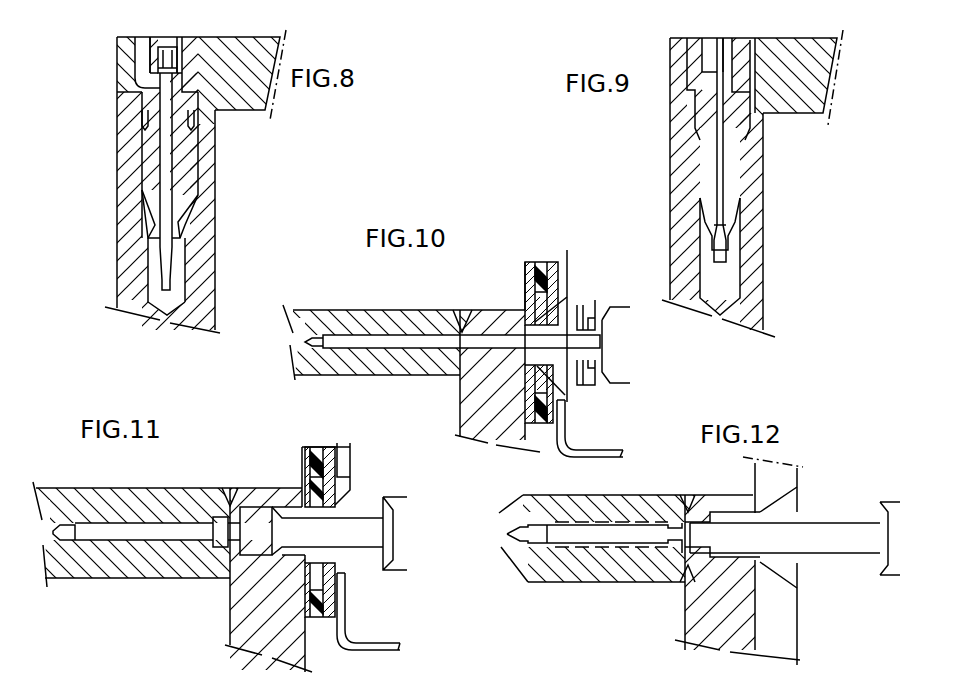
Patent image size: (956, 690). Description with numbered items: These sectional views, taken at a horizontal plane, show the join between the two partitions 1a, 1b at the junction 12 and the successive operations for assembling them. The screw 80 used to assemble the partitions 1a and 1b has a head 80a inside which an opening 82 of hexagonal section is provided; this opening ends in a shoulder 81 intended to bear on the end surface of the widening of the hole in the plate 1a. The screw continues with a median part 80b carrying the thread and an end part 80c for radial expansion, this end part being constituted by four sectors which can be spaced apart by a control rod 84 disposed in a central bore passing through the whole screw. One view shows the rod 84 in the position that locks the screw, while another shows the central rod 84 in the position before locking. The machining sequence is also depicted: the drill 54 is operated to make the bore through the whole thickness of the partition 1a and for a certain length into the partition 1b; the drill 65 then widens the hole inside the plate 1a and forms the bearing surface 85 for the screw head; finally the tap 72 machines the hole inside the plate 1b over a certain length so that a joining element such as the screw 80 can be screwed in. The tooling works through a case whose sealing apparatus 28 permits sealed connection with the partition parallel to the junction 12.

In FIG. 8, the first partition 1a is at (262, 38).
In FIG. 9, the first partition 1a is at (822, 46).
In FIG. 10, the first partition 1a is at (470, 390).
In FIG. 11, the first partition 1a is at (236, 610).
In FIG. 12, the first partition 1a is at (692, 602).
In FIG. 8, the second partition 1b is at (210, 173).
In FIG. 9, the second partition 1b is at (750, 284).
In FIG. 10, the second partition 1b is at (428, 318).
In FIG. 11, the second partition 1b is at (158, 493).
In FIG. 12, the second partition 1b is at (637, 507).
In FIG. 10, the junction 12 is at (468, 316).
In FIG. 10, the sealing apparatus 28 is at (550, 312).
In FIG. 10, the drill 54 is at (392, 340).
In FIG. 11, the drill 65 is at (340, 528).
In FIG. 12, the tap 72 is at (808, 533).
In FIG. 8, the screw 80 is at (190, 58).
In FIG. 9, the screw 80 is at (735, 80).
In FIG. 8, the head 80a is at (142, 73).
In FIG. 8, the median part 80b is at (176, 141).
In FIG. 8, the end part 80c is at (185, 231).
In FIG. 8, the shoulder 81 is at (136, 92).
In FIG. 8, the opening 82 is at (166, 46).
In FIG. 8, the control rod 84 is at (160, 170).
In FIG. 9, the control rod 84 is at (720, 158).
In FIG. 11, the bearing surface 85 is at (250, 516).